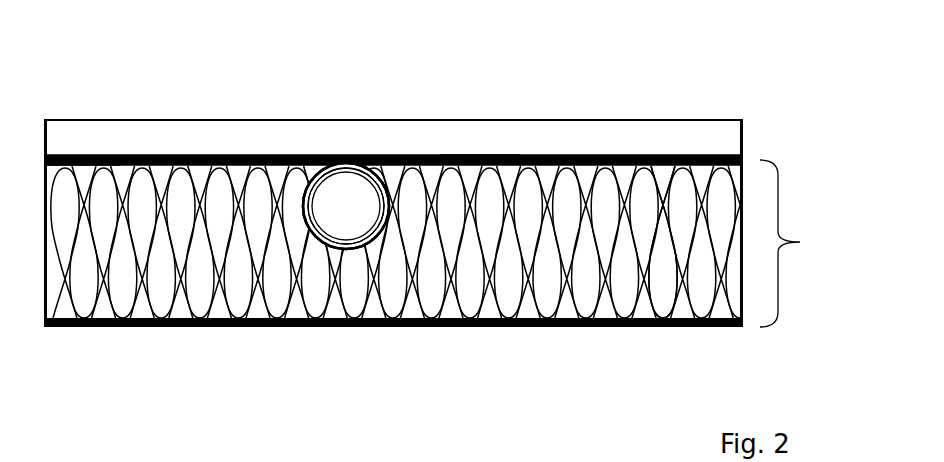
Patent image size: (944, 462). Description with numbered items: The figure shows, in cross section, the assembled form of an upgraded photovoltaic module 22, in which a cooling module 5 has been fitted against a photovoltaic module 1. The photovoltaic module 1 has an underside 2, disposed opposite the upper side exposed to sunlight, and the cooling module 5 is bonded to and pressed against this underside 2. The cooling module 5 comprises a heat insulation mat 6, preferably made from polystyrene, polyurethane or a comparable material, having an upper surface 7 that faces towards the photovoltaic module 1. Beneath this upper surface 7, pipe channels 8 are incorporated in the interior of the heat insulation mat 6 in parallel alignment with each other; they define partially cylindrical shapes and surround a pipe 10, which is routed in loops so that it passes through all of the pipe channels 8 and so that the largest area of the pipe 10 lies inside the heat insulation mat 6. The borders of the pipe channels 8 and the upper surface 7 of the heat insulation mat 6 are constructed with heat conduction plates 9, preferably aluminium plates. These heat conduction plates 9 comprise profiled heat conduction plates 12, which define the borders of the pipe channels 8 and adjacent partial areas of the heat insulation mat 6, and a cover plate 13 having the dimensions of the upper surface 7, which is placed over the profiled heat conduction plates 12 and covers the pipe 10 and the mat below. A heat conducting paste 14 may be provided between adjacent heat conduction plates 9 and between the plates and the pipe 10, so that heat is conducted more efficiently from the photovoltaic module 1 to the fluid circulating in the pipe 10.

The photovoltaic module 1 is at (602, 152).
The underside 2 is at (78, 167).
The cooling module 5 is at (440, 243).
The heat insulation mat 6 is at (663, 300).
The upper surface 7 is at (478, 160).
The pipe channel 8 is at (328, 245).
The heat conduction plates 9 is at (467, 247).
The pipe 10 is at (335, 217).
The profiled heat conduction plates 12 is at (753, 155).
The cover plate 13 is at (753, 152).
The heat conducting paste 14 is at (345, 248).
The upgraded photovoltaic module 22 is at (218, 355).